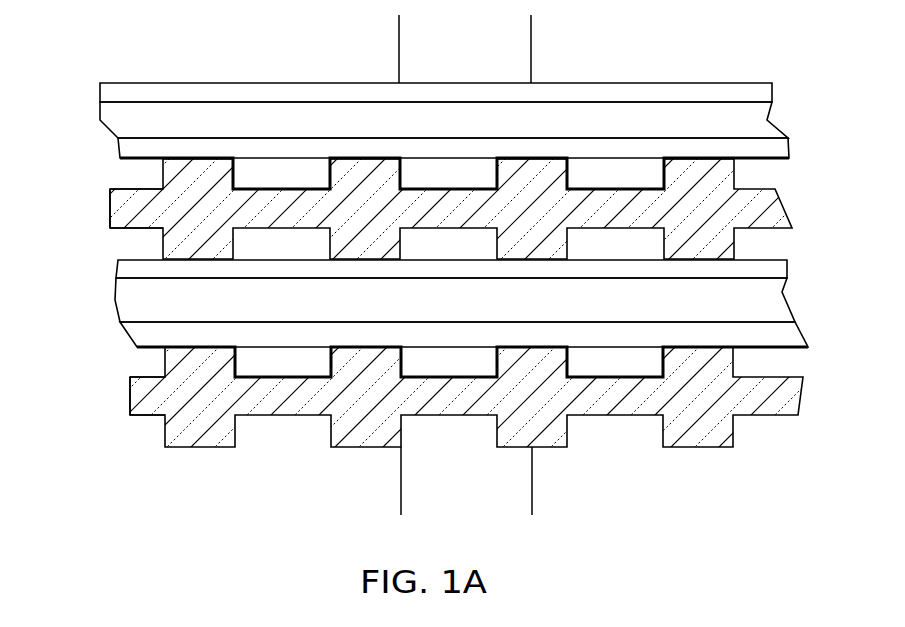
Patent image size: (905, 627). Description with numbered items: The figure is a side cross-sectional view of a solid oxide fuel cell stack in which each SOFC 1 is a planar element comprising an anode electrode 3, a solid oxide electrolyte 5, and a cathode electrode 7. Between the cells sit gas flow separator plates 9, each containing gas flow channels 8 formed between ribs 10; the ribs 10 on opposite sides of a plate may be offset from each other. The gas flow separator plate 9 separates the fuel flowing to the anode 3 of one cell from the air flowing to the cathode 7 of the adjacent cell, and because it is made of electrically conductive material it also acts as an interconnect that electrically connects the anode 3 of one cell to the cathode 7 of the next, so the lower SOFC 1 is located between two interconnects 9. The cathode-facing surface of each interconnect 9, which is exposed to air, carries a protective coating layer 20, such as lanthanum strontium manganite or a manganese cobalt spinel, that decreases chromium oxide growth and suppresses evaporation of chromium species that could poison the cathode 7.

The SOFC 1 is at (449, 211).
The anode electrode 3 is at (100, 92).
The solid oxide electrolyte 5 is at (100, 122).
The cathode electrode 7 is at (120, 150).
The gas flow channels 8 is at (275, 181).
The gas flow separator plate 9 is at (452, 277).
The ribs 10 is at (160, 177).
The protective coating layer 20 is at (262, 188).